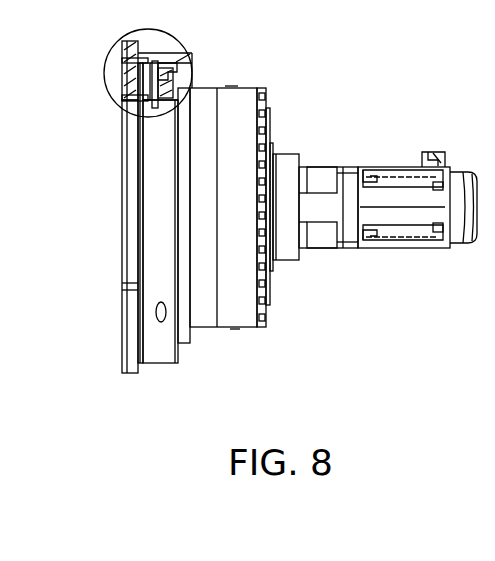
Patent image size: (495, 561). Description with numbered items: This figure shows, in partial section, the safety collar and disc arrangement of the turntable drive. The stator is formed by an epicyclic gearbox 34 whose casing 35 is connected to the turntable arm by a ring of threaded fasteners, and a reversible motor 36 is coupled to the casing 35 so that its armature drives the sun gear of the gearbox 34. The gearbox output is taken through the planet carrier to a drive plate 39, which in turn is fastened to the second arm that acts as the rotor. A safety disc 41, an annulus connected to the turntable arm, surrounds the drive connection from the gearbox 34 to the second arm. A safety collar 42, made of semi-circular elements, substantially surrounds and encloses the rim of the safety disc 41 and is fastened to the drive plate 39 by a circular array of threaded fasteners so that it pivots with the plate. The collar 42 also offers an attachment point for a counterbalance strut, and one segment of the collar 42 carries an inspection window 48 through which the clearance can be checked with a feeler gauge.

The epicyclic gearbox 34 is at (251, 85).
The casing 35 is at (207, 327).
The reversible motor 36 is at (378, 175).
The drive plate 39 is at (132, 373).
The safety disc 41 is at (182, 343).
The safety collar 42 is at (162, 365).
The inspection window 48 is at (160, 302).